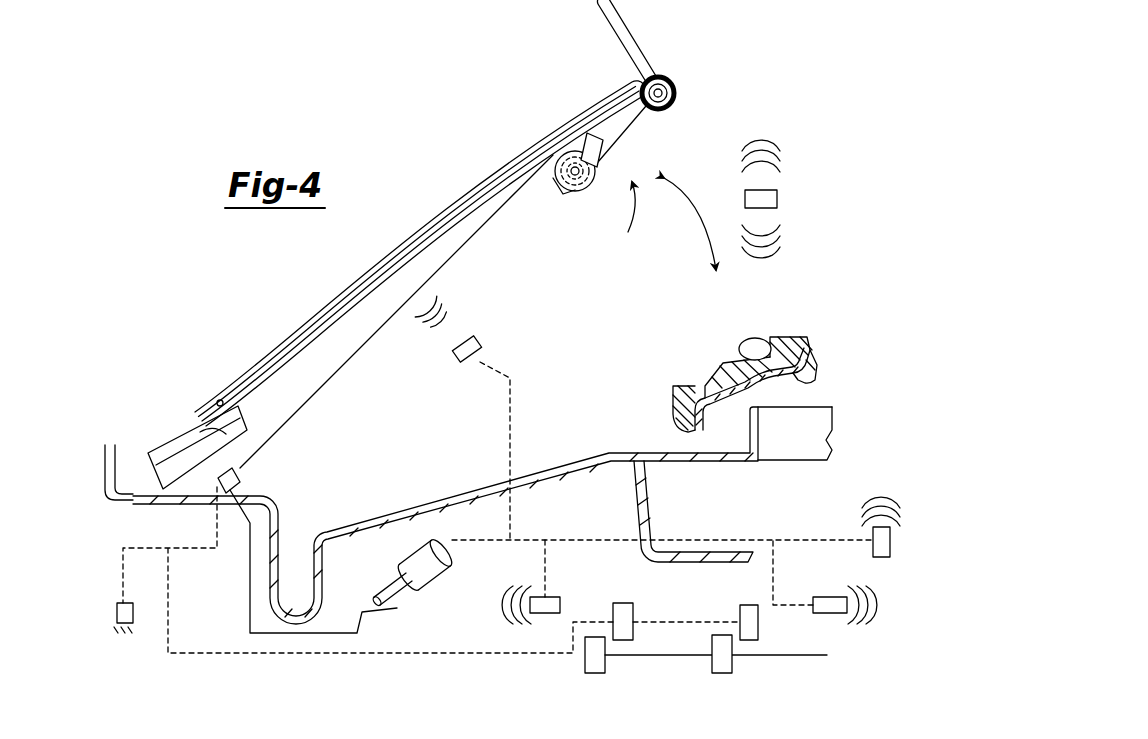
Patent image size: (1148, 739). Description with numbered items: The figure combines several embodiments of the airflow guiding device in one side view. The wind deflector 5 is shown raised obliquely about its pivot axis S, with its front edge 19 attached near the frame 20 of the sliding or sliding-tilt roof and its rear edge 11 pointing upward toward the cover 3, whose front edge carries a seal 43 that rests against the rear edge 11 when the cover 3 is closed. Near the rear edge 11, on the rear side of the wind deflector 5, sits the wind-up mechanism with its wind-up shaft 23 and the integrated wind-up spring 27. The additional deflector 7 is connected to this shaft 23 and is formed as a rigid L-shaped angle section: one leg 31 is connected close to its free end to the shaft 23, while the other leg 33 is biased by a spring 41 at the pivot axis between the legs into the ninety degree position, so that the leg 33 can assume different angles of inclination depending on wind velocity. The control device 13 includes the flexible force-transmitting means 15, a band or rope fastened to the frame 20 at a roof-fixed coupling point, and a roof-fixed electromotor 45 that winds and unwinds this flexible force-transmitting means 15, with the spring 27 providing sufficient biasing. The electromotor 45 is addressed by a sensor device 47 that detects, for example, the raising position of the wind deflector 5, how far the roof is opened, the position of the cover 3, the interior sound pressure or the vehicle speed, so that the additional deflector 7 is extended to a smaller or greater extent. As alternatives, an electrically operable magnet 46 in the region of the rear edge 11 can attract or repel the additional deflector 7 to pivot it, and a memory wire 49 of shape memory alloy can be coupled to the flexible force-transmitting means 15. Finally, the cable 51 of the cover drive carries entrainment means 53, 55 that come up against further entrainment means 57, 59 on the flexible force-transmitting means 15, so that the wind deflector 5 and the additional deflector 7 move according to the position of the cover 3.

The cover 3 is at (795, 336).
The wind deflector 5 is at (440, 212).
The additional deflector 7 is at (630, 221).
The rear edge 11 is at (622, 80).
The control device 13 is at (368, 352).
The flexible force-transmitting means 15 is at (293, 416).
The front edge 19 is at (167, 448).
The frame 20 is at (172, 512).
The wind-up shaft 23 is at (560, 143).
The wind-up spring 27 is at (576, 194).
The leg 31 is at (637, 118).
The leg 33 is at (623, 26).
The spring 41 is at (677, 96).
The seal 43 is at (742, 352).
The electromotor 45 is at (405, 592).
The electrically operable magnet 46 is at (778, 198).
The sensor device 47 is at (480, 345).
The memory wire 49 is at (115, 608).
The cable 51 is at (820, 652).
The entrainment means 53 is at (717, 635).
The entrainment means 55 is at (585, 667).
The entrainment means 57 is at (758, 620).
The entrainment means 59 is at (640, 610).
The pivot axis S is at (217, 400).